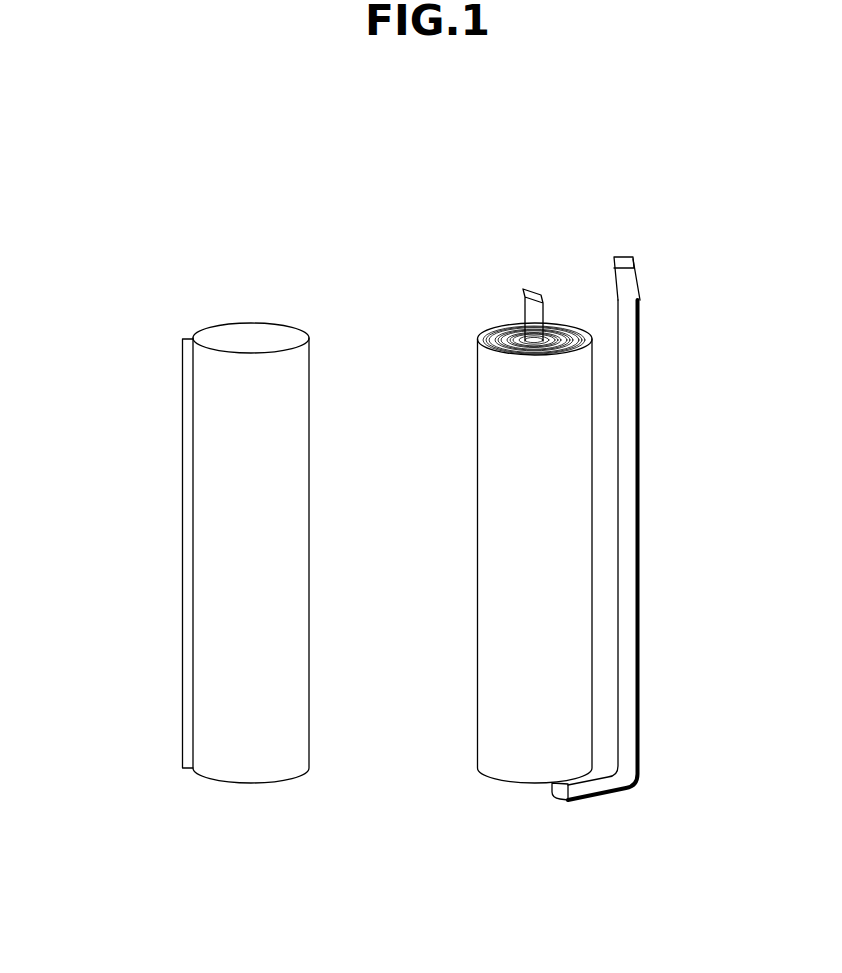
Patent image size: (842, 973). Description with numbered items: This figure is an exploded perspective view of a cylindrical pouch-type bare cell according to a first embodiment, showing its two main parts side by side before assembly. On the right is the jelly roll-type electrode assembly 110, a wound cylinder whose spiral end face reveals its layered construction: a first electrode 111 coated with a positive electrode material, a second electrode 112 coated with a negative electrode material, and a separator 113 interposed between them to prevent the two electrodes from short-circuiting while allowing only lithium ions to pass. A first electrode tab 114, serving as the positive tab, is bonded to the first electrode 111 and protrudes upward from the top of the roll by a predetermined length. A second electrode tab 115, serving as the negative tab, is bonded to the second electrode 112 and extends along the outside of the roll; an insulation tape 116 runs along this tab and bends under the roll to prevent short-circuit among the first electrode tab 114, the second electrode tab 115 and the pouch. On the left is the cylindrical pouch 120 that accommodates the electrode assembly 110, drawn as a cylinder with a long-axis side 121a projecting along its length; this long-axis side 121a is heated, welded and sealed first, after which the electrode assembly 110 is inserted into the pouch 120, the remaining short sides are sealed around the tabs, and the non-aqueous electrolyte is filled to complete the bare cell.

The jelly roll-type electrode assembly 110 is at (513, 578).
The first electrode 111 is at (498, 339).
The second electrode 112 is at (492, 339).
The separator 113 is at (495, 339).
The first electrode tab 114 is at (534, 292).
The second electrode tab 115 is at (627, 270).
The insulation tape 116 is at (538, 320).
The cylindrical pouch 120 is at (206, 458).
The long-axis side 121a is at (183, 612).